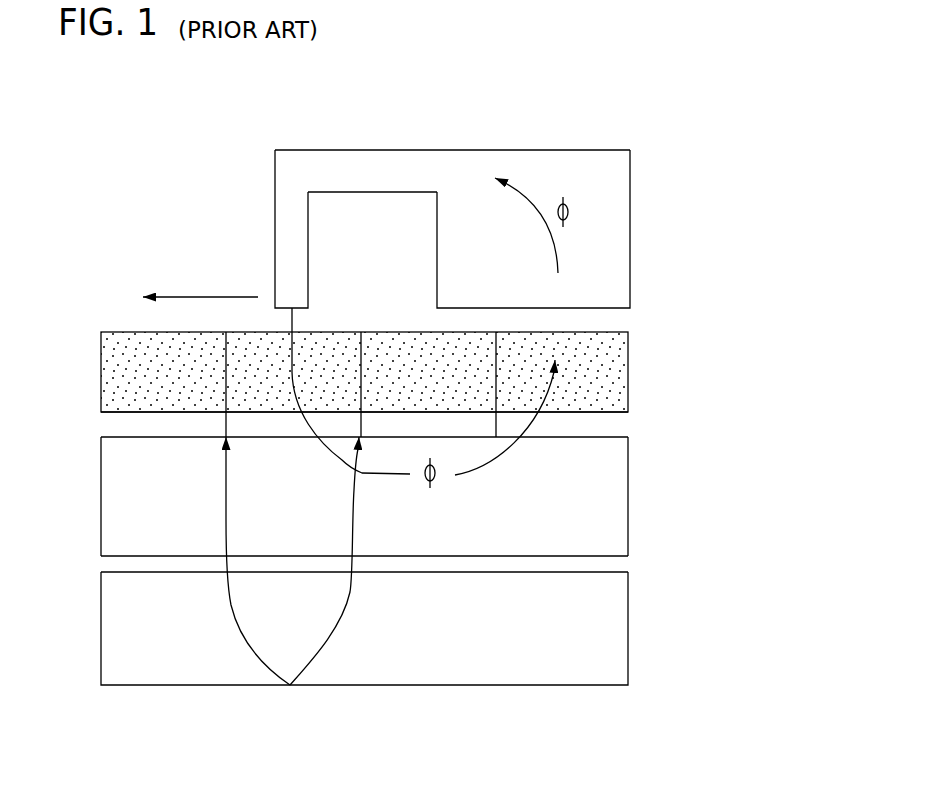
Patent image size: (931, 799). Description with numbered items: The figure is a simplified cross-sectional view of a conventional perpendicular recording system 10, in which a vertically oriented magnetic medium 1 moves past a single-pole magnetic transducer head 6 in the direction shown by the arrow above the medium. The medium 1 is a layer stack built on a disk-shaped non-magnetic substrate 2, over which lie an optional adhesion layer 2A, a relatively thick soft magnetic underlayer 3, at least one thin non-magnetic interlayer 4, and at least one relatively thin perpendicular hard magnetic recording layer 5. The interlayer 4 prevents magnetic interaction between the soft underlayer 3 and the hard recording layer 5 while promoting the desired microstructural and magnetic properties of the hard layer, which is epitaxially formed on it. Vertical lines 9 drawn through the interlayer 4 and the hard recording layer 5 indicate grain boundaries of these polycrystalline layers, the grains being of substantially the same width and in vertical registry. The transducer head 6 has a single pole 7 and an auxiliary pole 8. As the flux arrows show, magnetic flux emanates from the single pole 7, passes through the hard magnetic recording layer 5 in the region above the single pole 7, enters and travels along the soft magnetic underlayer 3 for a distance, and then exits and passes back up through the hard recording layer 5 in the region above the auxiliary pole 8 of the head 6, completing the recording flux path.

The perpendicular magnetic medium 1 is at (82, 477).
The non-magnetic substrate 2 is at (439, 628).
The adhesion layer 2A is at (475, 564).
The soft magnetic underlayer 3 is at (445, 496).
The non-magnetic interlayer 4 is at (439, 424).
The perpendicular hard magnetic recording layer 5 is at (472, 384).
The single-pole magnetic transducer head 6 is at (341, 136).
The single pole 7 is at (268, 216).
The auxiliary pole 8 is at (638, 205).
The vertical lines 9 is at (290, 685).
The perpendicular recording system 10 is at (630, 117).